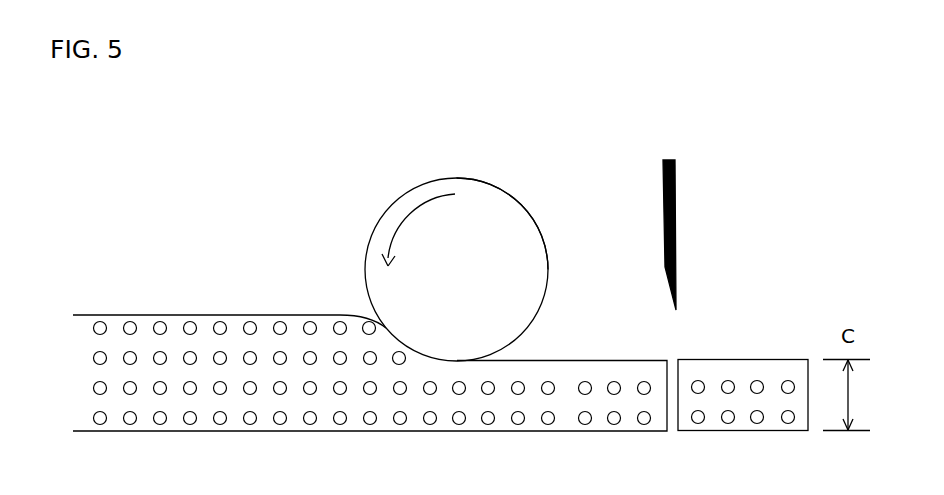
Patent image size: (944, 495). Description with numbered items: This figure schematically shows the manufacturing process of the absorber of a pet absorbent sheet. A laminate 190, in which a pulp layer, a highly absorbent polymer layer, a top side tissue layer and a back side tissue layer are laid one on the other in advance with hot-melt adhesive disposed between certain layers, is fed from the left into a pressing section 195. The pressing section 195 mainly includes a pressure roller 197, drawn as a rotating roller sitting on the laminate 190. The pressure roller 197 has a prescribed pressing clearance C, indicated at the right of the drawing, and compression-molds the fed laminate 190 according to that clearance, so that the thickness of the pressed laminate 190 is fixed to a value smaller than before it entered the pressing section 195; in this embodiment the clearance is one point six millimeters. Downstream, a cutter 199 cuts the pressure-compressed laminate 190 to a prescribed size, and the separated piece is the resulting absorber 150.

The laminate 190 is at (176, 344).
The pressing section 195 is at (410, 172).
The pressure roller 197 is at (496, 242).
The cutter 199 is at (676, 206).
The absorber 150 is at (745, 378).